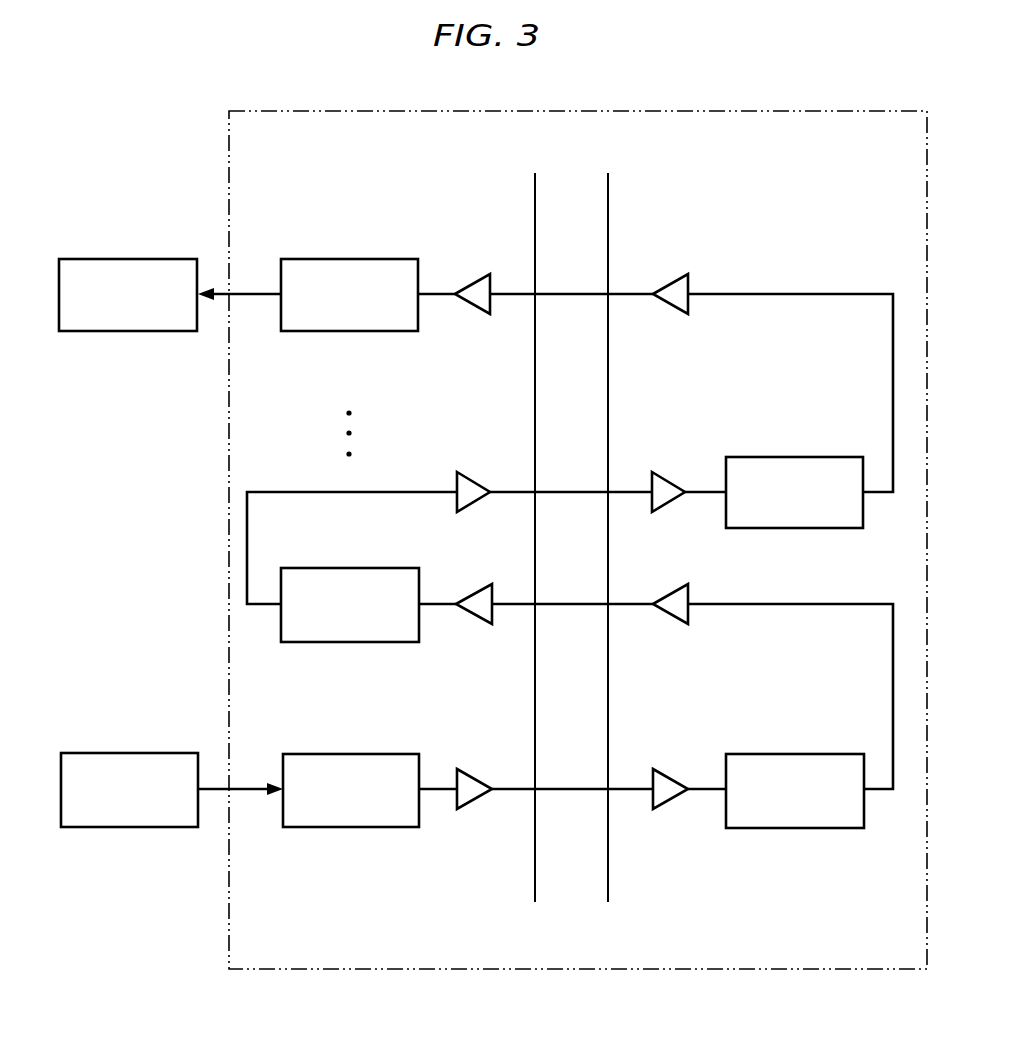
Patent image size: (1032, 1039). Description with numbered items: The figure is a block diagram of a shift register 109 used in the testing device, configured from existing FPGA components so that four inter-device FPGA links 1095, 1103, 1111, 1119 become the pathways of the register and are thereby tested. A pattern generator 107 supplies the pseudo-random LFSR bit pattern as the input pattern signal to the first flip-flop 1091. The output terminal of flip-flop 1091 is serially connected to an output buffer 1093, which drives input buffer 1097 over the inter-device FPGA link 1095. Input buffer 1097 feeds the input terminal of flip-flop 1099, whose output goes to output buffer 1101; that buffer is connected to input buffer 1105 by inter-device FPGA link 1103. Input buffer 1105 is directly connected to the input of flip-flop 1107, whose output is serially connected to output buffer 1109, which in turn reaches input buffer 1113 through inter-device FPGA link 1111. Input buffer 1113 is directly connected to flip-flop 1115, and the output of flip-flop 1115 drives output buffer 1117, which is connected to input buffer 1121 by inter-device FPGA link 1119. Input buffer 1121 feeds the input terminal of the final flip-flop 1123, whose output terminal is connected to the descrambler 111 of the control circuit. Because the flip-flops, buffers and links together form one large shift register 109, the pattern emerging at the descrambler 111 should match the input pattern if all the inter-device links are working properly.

The pattern generator 107 is at (147, 753).
The shift register 109 is at (432, 969).
The descrambler 111 is at (147, 259).
The flip-flop 1091 is at (395, 754).
The output buffer 1093 is at (470, 771).
The inter-device FPGA link 1095 is at (558, 789).
The input buffer 1097 is at (665, 771).
The flip-flop 1099 is at (840, 754).
The output buffer 1101 is at (674, 586).
The inter-device FPGA link 1103 is at (555, 604).
The input buffer 1105 is at (478, 586).
The flip-flop 1107 is at (395, 568).
The output buffer 1109 is at (468, 474).
The inter-device FPGA link 1111 is at (555, 492).
The input buffer 1113 is at (663, 474).
The flip-flop 1115 is at (840, 457).
The output buffer 1117 is at (674, 276).
The inter-device FPGA link 1119 is at (555, 294).
The input buffer 1121 is at (478, 276).
The flip-flop 1123 is at (395, 259).